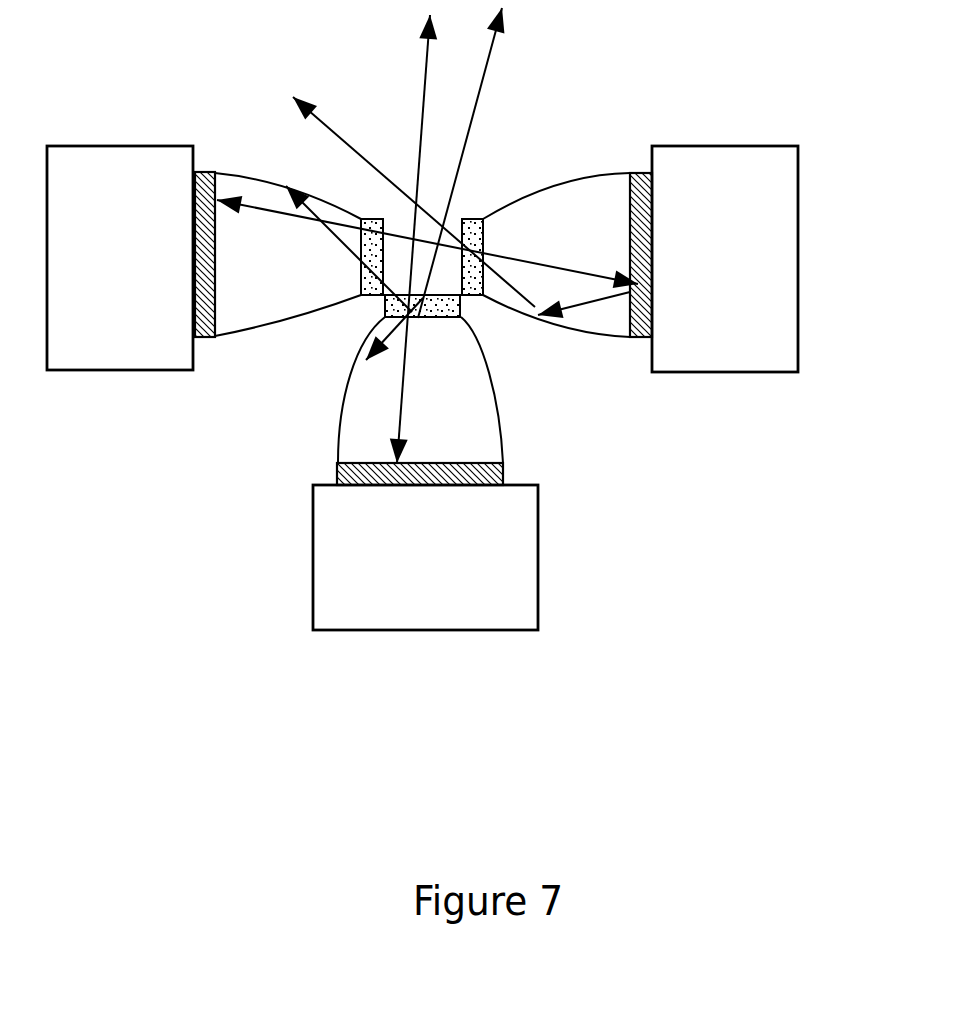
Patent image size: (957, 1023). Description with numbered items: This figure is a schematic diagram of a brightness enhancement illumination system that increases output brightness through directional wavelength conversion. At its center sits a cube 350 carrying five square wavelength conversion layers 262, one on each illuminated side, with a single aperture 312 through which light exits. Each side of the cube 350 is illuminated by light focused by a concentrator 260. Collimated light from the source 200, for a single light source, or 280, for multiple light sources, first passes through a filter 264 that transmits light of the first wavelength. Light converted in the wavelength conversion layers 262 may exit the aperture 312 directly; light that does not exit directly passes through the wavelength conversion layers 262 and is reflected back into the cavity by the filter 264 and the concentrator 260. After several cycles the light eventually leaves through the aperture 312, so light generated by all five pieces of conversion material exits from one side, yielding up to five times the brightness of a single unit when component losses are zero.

The aperture 312 is at (498, 162).
The cube 350 is at (475, 218).
The concentrator 260 is at (342, 420).
The wavelength conversion layer 262 is at (463, 315).
The filter 264 is at (503, 473).
The source 200 is at (585, 557).
The source 280 is at (527, 565).